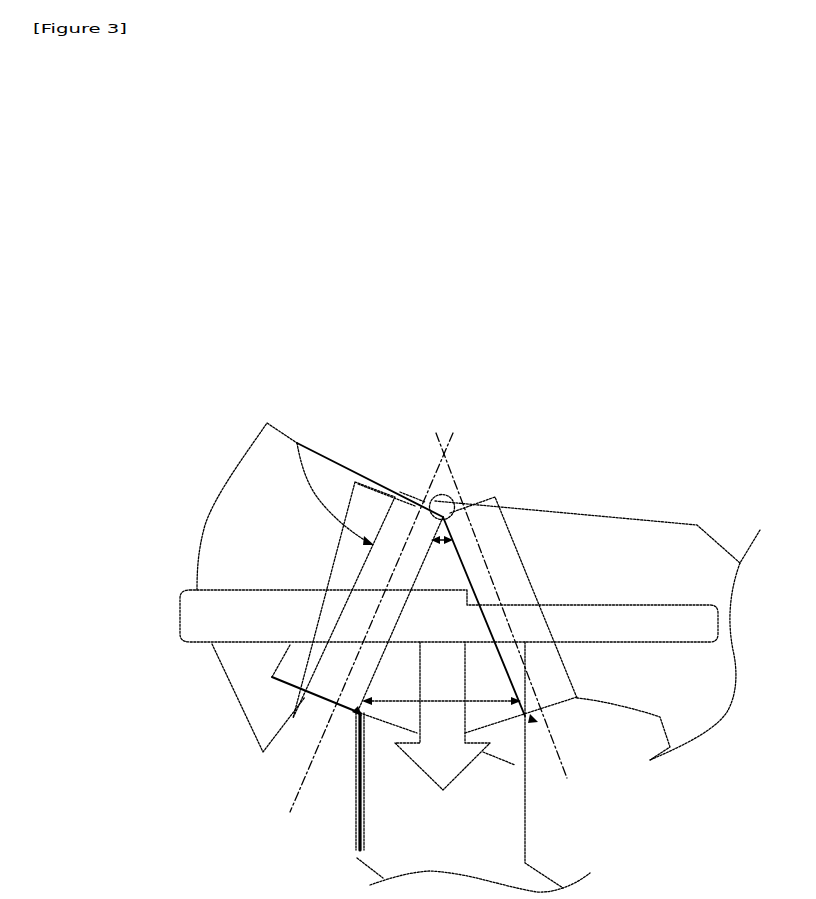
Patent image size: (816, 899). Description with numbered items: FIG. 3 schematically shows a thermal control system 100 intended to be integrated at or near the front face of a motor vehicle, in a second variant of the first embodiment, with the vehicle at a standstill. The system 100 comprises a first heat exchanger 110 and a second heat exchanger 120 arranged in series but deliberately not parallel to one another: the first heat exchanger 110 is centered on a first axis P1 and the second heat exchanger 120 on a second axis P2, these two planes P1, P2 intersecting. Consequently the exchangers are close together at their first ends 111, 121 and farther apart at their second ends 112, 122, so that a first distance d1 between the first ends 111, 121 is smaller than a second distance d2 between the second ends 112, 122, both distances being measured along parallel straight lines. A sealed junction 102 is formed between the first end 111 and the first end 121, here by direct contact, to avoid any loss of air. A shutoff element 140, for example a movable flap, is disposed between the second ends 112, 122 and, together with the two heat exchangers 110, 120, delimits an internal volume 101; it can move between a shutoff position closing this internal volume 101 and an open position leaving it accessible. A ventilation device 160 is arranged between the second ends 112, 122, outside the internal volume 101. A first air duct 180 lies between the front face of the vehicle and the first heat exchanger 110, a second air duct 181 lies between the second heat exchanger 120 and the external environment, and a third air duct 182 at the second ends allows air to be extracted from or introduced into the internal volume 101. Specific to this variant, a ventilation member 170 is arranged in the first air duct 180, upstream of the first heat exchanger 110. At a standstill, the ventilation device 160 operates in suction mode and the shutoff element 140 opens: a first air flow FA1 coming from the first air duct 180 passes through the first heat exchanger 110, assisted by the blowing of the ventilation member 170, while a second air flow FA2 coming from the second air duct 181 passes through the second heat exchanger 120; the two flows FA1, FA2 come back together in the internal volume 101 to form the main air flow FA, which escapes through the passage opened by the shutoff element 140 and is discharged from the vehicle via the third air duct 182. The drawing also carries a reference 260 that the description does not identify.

The thermal control system 100 is at (604, 450).
The internal volume 101 is at (407, 681).
The sealed junction 102 is at (480, 502).
The first heat exchanger 110 is at (297, 443).
The first end of the first heat exchanger 111 is at (400, 494).
The second end of the first heat exchanger 112 is at (308, 715).
The second heat exchanger 120 is at (533, 720).
The first end of the second heat exchanger 121 is at (472, 504).
The second end of the second heat exchanger 122 is at (556, 703).
The shutoff element 140 is at (357, 742).
The ventilation device 160 is at (483, 752).
The ventilation member 170 is at (272, 677).
The first air duct 180 is at (259, 502).
The second air duct 181 is at (676, 712).
The third air duct 182 is at (433, 838).
The lens 260 is at (200, 536).
The first axis P1 is at (442, 468).
The second axis P2 is at (447, 468).
The first distance d1 is at (451, 543).
The second distance d2 is at (499, 696).
The main air flow FA is at (437, 768).
The first air flow FA1 is at (197, 643).
The second air flow FA2 is at (620, 604).